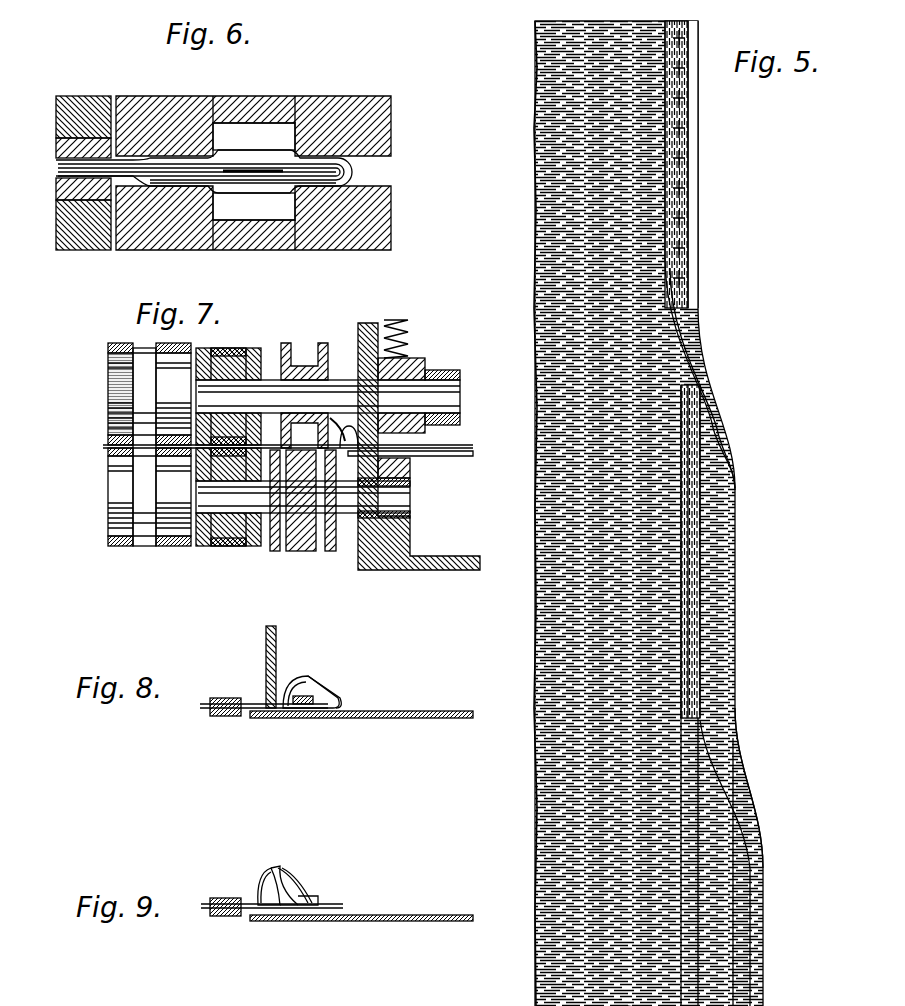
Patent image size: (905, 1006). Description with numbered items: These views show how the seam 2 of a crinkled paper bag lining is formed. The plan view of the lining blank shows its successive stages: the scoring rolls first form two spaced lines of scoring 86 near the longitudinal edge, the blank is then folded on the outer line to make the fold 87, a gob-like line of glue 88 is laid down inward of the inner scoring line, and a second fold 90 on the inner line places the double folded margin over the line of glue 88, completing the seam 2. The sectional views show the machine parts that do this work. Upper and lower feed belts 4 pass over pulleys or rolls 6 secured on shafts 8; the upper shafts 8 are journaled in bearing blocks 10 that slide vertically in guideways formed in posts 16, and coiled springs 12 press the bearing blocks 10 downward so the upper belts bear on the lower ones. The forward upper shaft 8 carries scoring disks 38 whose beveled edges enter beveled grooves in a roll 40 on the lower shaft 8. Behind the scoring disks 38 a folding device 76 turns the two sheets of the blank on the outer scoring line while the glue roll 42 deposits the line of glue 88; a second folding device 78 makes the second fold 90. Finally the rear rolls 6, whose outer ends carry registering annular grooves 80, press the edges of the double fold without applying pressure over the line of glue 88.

In FIG. 6, the seam 2 is at (352, 162).
In FIG. 5, the seam 2 is at (693, 124).
In FIG. 6, the feed belts 4 is at (58, 132).
In FIG. 7, the feed belts 4 is at (106, 335).
In FIG. 8, the feed belts 4 is at (222, 690).
In FIG. 9, the feed belts 4 is at (205, 892).
In FIG. 6, the pulleys or rolls 6 is at (83, 98).
In FIG. 7, the pulleys or rolls 6 is at (106, 378).
In FIG. 7, the shafts 8 is at (438, 387).
In FIG. 7, the bearing blocks 10 is at (405, 355).
In FIG. 7, the coiled springs 12 is at (398, 314).
In FIG. 7, the posts 16 is at (404, 531).
In FIG. 7, the scoring disks 38 is at (315, 335).
In FIG. 7, the roll 40 is at (292, 545).
In FIG. 8, the glue roll 42 is at (270, 637).
In FIG. 7, the folding device 76 is at (341, 418).
In FIG. 8, the folding device 76 is at (338, 688).
In FIG. 9, the folding device 78 is at (250, 872).
In FIG. 6, the annular grooves 80 is at (245, 118).
In FIG. 8, the lines of scoring 86 is at (278, 690).
In FIG. 9, the lines of scoring 86 is at (268, 862).
In FIG. 5, the lines of scoring 86 is at (692, 890).
In FIG. 5, the fold 87 is at (720, 540).
In FIG. 6, the line of glue 88 is at (243, 167).
In FIG. 5, the line of glue 88 is at (678, 600).
In FIG. 5, the second fold 90 is at (682, 27).